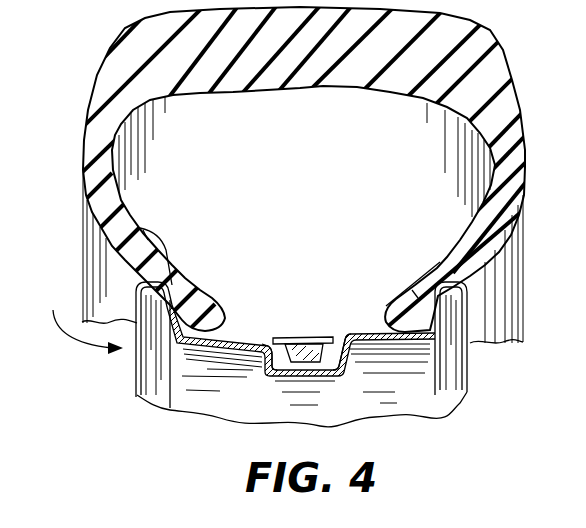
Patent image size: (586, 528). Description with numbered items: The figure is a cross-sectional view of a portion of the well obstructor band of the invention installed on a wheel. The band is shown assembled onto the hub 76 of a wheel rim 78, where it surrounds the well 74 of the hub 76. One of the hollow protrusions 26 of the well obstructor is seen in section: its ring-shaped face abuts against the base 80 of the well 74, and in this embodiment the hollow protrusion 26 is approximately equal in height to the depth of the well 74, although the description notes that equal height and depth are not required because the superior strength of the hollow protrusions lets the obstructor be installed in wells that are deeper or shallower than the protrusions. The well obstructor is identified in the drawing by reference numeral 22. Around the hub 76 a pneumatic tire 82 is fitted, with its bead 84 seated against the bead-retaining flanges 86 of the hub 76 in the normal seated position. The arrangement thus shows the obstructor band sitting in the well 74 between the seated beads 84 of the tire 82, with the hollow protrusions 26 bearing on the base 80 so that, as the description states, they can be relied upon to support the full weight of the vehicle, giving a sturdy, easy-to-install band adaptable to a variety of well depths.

The rim 22 is at (327, 334).
The hollow protrusion 26 is at (307, 338).
The well 74 is at (270, 348).
The hub 76 is at (202, 340).
The wheel rim 78 is at (81, 317).
The base 80 is at (350, 358).
The pneumatic tire 82 is at (82, 130).
The bead 84 is at (212, 287).
The bead-retaining flanges 86 is at (143, 233).